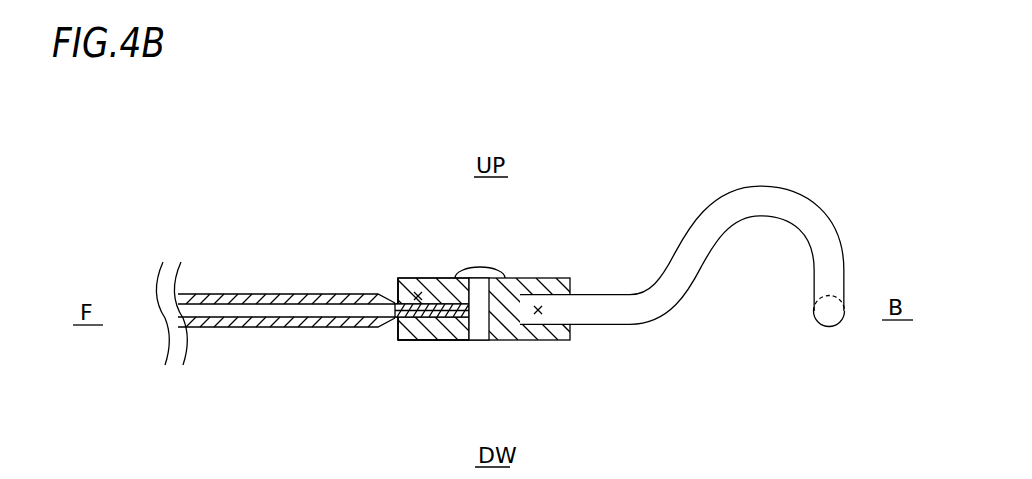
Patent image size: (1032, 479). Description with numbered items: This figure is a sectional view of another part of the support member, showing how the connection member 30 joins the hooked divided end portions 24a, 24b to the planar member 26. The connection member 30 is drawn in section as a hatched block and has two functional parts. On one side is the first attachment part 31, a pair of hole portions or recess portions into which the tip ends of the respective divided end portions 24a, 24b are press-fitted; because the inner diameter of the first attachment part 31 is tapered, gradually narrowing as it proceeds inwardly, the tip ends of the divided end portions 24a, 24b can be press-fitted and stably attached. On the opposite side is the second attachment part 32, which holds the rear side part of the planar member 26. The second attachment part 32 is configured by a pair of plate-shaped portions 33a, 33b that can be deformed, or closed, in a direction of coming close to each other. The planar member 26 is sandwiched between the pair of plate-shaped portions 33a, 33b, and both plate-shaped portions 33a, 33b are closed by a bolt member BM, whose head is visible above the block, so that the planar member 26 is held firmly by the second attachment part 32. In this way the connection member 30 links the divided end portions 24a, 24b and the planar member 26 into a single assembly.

The planar member 26 is at (233, 300).
The divided end portion 24a is at (682, 258).
The divided end portion 24b is at (592, 308).
The connection member 30 is at (477, 365).
The first attachment part 31 is at (538, 306).
The second attachment part 32 is at (403, 365).
The plate-shaped portion 33a is at (397, 331).
The plate-shaped portion 33b is at (433, 327).
The bolt member BM is at (480, 272).